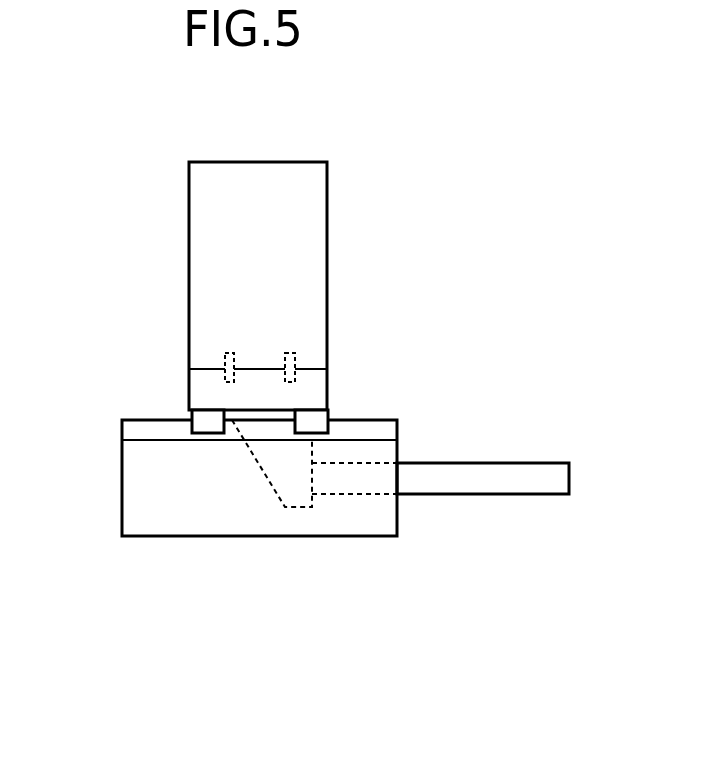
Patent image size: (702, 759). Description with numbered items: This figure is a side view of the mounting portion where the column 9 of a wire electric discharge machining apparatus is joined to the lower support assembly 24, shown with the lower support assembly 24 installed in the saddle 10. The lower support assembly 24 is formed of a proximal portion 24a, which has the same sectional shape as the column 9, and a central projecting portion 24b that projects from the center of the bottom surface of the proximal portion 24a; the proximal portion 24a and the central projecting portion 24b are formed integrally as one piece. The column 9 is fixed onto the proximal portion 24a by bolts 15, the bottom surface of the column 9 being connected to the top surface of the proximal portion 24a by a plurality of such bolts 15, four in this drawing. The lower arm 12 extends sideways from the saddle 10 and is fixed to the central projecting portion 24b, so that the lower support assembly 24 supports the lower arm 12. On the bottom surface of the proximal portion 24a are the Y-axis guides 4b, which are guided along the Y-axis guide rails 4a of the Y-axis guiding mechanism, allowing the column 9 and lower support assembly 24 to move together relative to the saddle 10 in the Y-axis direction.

The column 9 is at (327, 200).
The saddle 10 is at (397, 518).
The lower arm 12 is at (523, 463).
The bolt 15 is at (225, 353).
The lower support assembly 24 is at (158, 372).
The proximal portion 24a is at (190, 398).
The central projecting portion 24b is at (263, 475).
The Y-axis guide rails 4a is at (397, 430).
The Y-axis guides 4b is at (205, 433).